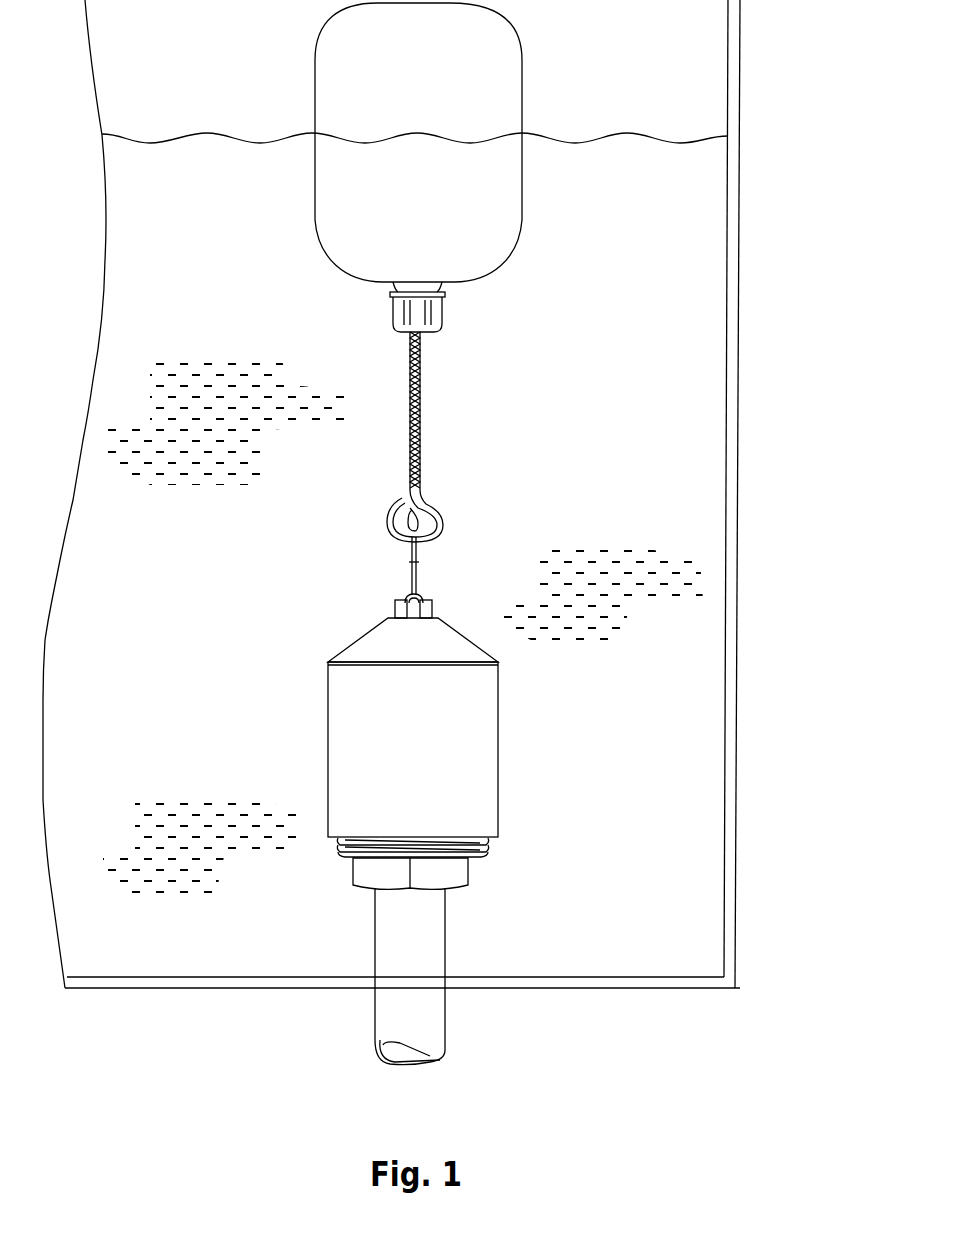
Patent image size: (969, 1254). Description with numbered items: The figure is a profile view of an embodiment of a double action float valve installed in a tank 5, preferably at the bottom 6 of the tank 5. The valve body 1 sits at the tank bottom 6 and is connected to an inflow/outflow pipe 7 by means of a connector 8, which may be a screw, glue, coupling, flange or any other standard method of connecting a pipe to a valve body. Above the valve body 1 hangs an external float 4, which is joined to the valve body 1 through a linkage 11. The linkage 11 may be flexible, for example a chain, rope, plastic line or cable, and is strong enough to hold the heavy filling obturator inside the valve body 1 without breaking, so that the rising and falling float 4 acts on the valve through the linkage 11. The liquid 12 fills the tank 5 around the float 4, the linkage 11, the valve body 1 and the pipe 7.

The valve body 1 is at (498, 752).
The external float 4 is at (530, 213).
The tank 5 is at (725, 431).
The bottom 6 is at (662, 993).
The inflow/outflow pipe 7 is at (443, 943).
The connector 8 is at (485, 852).
The linkage 11 is at (418, 577).
The liquid 12 is at (228, 276).